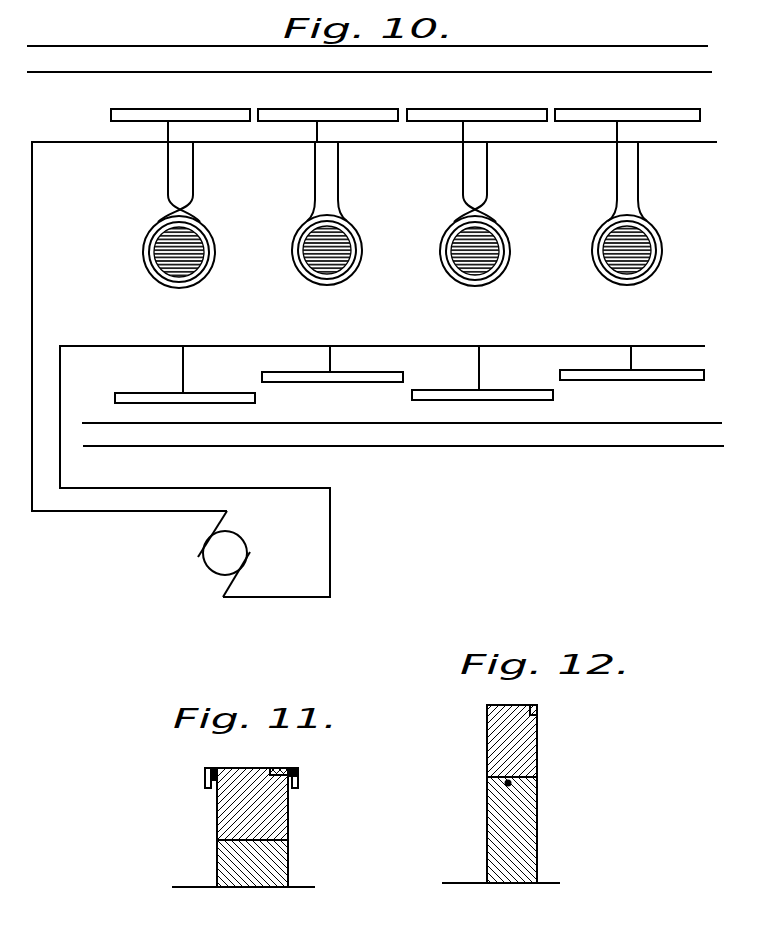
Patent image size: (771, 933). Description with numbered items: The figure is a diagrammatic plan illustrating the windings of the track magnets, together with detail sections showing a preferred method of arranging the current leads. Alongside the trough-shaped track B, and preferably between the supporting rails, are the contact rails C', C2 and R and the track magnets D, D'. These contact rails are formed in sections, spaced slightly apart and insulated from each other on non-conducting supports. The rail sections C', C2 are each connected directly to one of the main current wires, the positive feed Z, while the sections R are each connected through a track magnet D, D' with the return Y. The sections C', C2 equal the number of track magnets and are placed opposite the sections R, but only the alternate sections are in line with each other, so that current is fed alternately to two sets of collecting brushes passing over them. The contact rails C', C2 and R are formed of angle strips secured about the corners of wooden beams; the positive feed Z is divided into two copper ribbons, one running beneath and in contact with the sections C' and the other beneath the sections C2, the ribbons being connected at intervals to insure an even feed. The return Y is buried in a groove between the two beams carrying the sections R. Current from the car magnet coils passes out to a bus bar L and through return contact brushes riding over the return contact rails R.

In FIG. 10, the track B is at (375, 246).
In FIG. 10, the contact rail sections R is at (405, 114).
In FIG. 12, the contact rail sections R is at (532, 739).
In FIG. 10, the return Y is at (374, 342).
In FIG. 12, the return Y is at (488, 829).
In FIG. 10, the track magnet D is at (188, 215).
In FIG. 10, the track magnet D' is at (488, 213).
In FIG. 10, the bus bar L is at (482, 214).
In FIG. 10, the positive feed Z is at (382, 456).
In FIG. 11, the positive feed Z is at (235, 764).
In FIG. 10, the contact rail sections C' is at (472, 364).
In FIG. 11, the contact rail sections C' is at (277, 832).
In FIG. 10, the contact rail sections C2 is at (334, 381).
In FIG. 11, the contact rail sections C2 is at (225, 804).